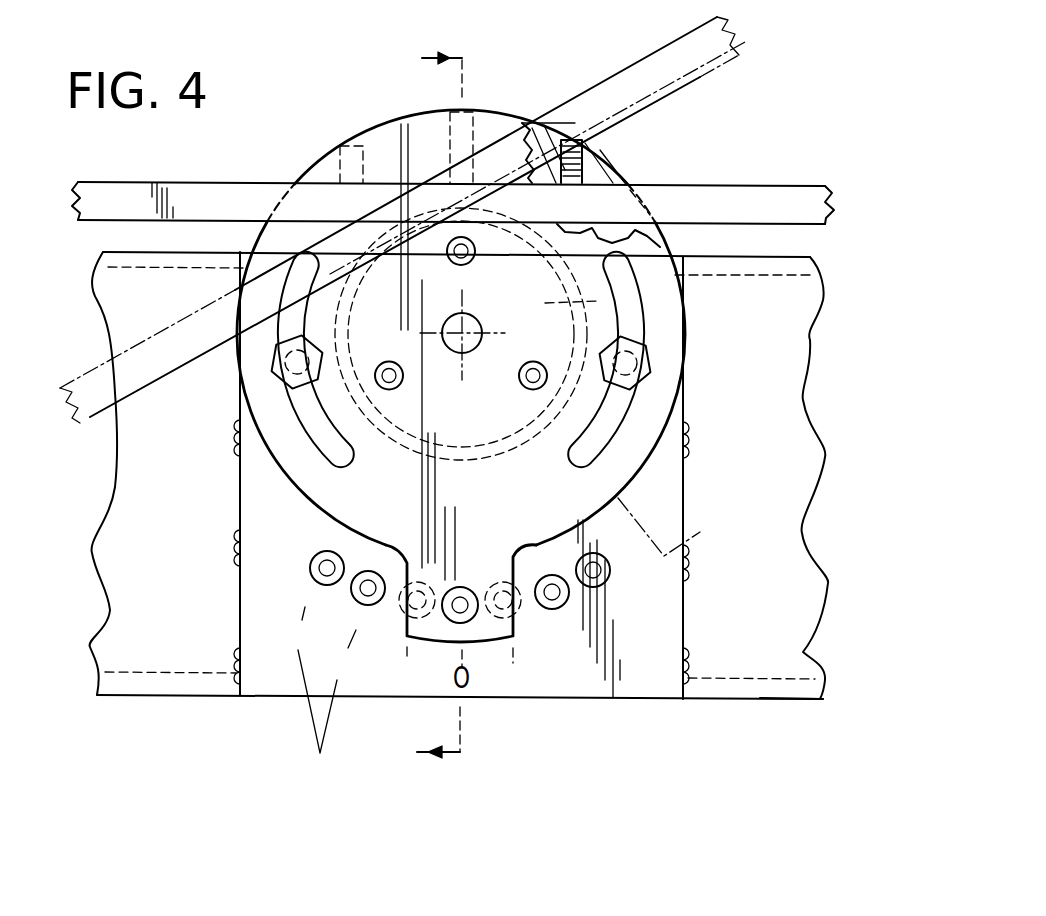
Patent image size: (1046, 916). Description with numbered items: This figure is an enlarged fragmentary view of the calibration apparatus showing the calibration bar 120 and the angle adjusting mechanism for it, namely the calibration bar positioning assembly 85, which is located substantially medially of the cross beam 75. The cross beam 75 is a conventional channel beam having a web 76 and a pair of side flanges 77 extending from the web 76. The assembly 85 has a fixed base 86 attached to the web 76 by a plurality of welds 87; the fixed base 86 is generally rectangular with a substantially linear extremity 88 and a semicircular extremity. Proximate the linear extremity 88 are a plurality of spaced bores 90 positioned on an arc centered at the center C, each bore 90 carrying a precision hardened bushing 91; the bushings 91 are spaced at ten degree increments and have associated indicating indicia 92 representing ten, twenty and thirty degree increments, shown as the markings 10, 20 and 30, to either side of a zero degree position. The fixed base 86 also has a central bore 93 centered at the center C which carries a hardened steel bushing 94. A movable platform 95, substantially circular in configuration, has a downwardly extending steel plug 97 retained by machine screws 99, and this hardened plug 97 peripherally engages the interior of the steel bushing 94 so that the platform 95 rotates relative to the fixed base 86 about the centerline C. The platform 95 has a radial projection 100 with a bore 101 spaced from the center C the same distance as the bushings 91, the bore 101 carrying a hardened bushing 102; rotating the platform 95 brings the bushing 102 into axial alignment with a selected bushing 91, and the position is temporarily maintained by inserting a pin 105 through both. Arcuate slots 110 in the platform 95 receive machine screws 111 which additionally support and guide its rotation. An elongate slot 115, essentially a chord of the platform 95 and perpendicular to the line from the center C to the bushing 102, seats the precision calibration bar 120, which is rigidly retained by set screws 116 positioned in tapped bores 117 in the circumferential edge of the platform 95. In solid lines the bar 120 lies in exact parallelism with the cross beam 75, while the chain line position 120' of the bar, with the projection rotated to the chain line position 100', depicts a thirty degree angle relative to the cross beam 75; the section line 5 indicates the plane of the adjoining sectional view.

The section line 5- 5 is at (424, 416).
The 10° indicating indicia 10 is at (465, 670).
The 20° indicating indicia 20 is at (320, 753).
The 30° indicating indicia 30 is at (320, 753).
The cross beam 75 is at (787, 700).
The web 76 is at (803, 463).
The side flanges 77 is at (810, 257).
The calibration bar positioning assembly 85 is at (688, 358).
The fixed base 86 is at (277, 678).
The welds 87 is at (695, 447).
The linear extremity 88 is at (617, 700).
The spaced bores 90 is at (310, 582).
The precision hardened bushings 91 is at (370, 570).
The indicating indicia 92 is at (317, 722).
The central bore 93 is at (537, 428).
The hardened steel bushing 94 is at (388, 426).
The movable platform 95 is at (683, 315).
The steel plug 97 is at (605, 300).
The machine screws 99 is at (521, 382).
The radial projection 100 is at (487, 703).
The radial projection chain line position 100' is at (697, 517).
The bore 101 is at (465, 585).
The hardened bushing 102 is at (472, 622).
The pin 105 is at (455, 615).
The arcuate slots 110 is at (622, 270).
The machine screws 111 is at (645, 377).
The elongate slot 115 is at (628, 220).
The set screws 116 is at (340, 162).
The tapped bores 117 is at (560, 138).
The calibration bar 120 is at (483, 172).
The calibration bar chain line position 120' is at (460, 220).
The center C is at (464, 330).